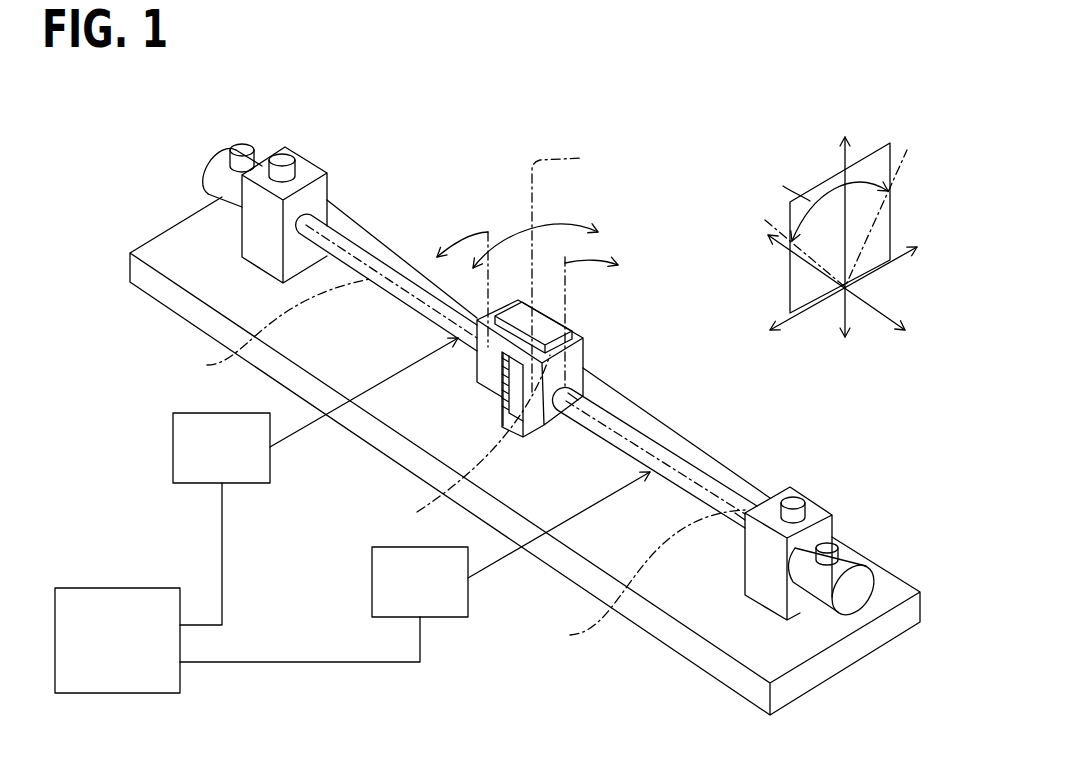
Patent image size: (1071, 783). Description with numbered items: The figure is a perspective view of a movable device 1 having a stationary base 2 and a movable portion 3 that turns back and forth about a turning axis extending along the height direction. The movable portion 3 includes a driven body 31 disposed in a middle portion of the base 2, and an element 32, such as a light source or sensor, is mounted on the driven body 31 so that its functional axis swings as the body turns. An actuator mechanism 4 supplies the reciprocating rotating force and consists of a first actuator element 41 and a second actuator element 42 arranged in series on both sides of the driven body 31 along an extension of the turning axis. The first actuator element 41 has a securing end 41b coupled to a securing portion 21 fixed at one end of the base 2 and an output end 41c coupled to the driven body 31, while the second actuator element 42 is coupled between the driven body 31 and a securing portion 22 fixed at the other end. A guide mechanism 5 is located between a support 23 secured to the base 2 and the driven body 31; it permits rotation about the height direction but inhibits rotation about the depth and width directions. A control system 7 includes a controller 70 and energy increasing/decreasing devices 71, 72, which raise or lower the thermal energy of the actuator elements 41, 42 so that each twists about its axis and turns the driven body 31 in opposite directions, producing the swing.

The movable device 1 is at (618, 210).
The base 2 is at (868, 520).
The securing portion 21 is at (827, 490).
The securing portion 22 is at (333, 163).
The support 23 is at (515, 412).
The movable portion 3 is at (606, 322).
The driven body 31 is at (588, 347).
The element 32 is at (542, 310).
The actuator mechanism 4 is at (752, 410).
The first actuator element 41 is at (666, 436).
The securing end 41b is at (744, 485).
The output end 41c is at (586, 368).
The second actuator element 42 is at (372, 244).
The guide mechanism 5 is at (473, 400).
The control system 7 is at (128, 488).
The controller 70 is at (120, 588).
The energy increasing/decreasing device 71 is at (372, 593).
The energy increasing/decreasing device 72 is at (173, 444).